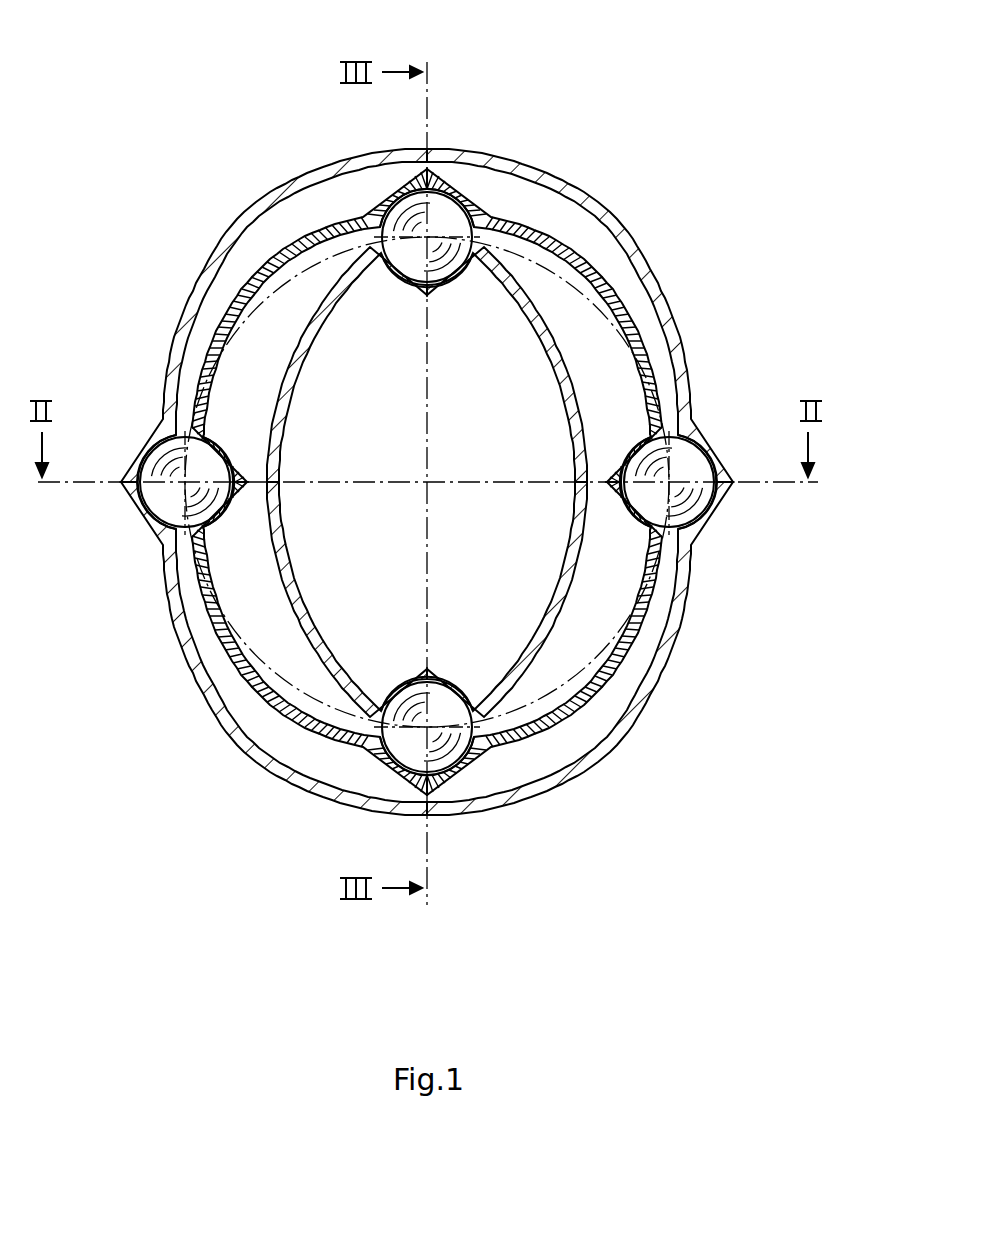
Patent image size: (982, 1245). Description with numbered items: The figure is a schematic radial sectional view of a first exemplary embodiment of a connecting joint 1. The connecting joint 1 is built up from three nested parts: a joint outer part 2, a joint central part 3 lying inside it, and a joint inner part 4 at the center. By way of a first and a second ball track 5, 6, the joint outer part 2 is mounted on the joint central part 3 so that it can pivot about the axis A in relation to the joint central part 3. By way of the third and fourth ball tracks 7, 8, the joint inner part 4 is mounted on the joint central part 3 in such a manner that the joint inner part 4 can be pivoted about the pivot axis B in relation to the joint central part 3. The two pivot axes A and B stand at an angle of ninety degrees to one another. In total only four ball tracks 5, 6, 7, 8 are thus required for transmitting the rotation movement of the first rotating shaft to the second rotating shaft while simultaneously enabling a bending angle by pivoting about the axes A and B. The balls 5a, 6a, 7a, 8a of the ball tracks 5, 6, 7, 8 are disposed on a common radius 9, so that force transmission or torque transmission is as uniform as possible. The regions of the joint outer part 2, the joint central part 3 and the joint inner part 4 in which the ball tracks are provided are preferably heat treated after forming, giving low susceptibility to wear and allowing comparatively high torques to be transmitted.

The connecting joint 1 is at (634, 98).
The joint outer part 2 is at (538, 160).
The joint central part 3 is at (583, 279).
The joint inner part 4 is at (547, 343).
The first ball track 5 is at (125, 529).
The second ball track 6 is at (729, 537).
The third ball track 7 is at (451, 652).
The fourth ball track 8 is at (402, 320).
The ball 5a is at (133, 493).
The ball 6a is at (700, 498).
The ball 7a is at (455, 716).
The ball 8a is at (407, 262).
The common radius 9 is at (310, 264).
The axis A is at (362, 480).
The pivot axis B is at (424, 533).